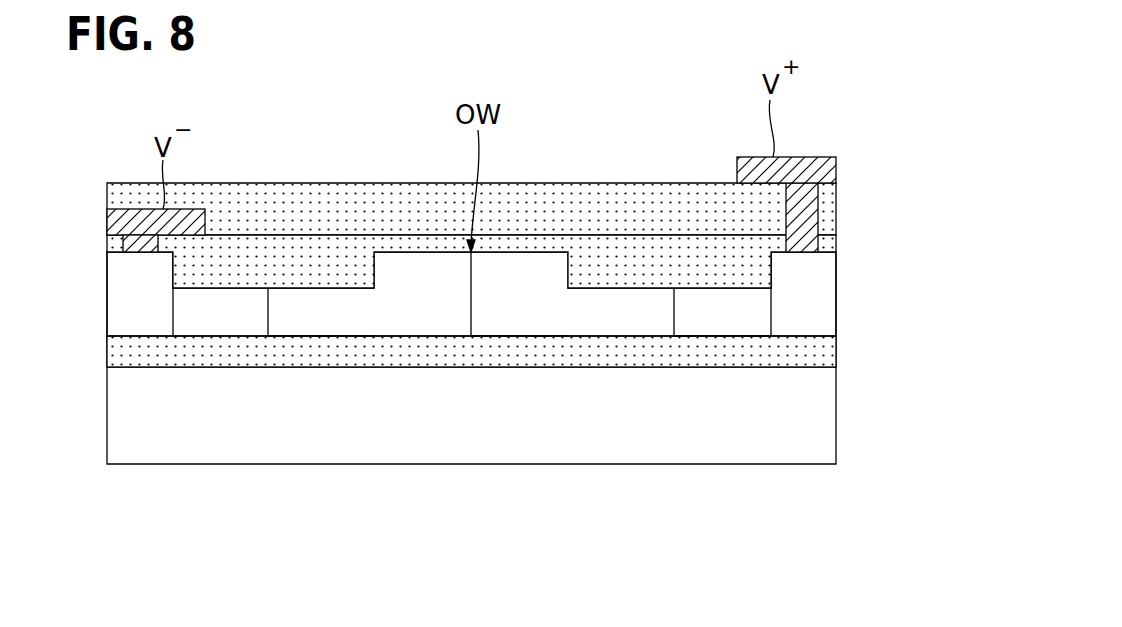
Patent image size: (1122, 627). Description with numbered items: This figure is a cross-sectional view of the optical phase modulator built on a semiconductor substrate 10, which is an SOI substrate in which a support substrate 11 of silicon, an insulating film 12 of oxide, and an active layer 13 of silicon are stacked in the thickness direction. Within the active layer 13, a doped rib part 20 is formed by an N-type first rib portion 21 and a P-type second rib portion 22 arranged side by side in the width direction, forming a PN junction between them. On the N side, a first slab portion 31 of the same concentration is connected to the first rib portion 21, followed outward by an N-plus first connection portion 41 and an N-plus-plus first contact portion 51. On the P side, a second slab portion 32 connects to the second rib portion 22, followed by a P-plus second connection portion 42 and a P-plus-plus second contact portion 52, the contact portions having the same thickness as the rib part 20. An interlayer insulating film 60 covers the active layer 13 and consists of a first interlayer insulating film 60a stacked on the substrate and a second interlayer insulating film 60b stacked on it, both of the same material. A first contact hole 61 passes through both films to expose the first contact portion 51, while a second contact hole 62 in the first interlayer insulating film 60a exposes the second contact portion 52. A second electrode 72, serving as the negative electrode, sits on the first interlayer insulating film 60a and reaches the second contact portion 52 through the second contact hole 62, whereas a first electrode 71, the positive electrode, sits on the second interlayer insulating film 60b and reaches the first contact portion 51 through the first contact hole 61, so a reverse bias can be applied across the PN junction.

The semiconductor substrate 10 is at (908, 298).
The support substrate 11 is at (822, 393).
The insulating film 12 is at (822, 347).
The active layer 13 is at (818, 318).
The rib part 20 is at (548, 527).
The first rib portion 21 is at (504, 325).
The second rib portion 22 is at (450, 322).
The first slab portion 31 is at (620, 328).
The second slab portion 32 is at (344, 322).
The first connection portion 41 is at (714, 325).
The second connection portion 42 is at (197, 327).
The first contact portion 51 is at (803, 328).
The second contact portion 52 is at (151, 328).
The interlayer insulating film 60 is at (910, 210).
The first interlayer insulating film 60a is at (832, 245).
The second interlayer insulating film 60b is at (832, 218).
The first contact hole 61 is at (812, 193).
The second contact hole 62 is at (137, 245).
The first electrode 71 is at (836, 163).
The second electrode 72 is at (117, 220).